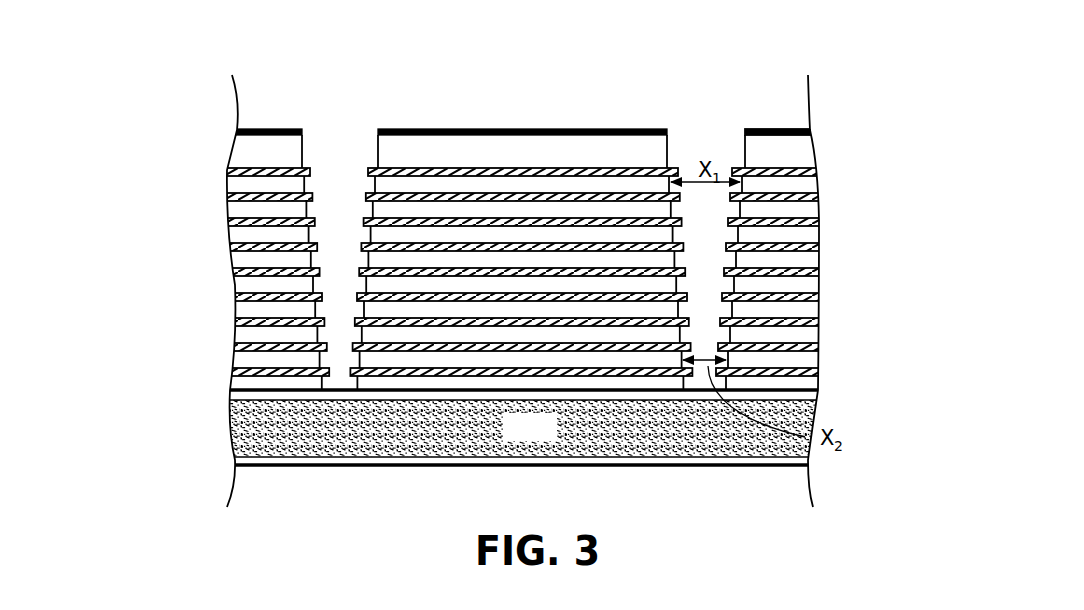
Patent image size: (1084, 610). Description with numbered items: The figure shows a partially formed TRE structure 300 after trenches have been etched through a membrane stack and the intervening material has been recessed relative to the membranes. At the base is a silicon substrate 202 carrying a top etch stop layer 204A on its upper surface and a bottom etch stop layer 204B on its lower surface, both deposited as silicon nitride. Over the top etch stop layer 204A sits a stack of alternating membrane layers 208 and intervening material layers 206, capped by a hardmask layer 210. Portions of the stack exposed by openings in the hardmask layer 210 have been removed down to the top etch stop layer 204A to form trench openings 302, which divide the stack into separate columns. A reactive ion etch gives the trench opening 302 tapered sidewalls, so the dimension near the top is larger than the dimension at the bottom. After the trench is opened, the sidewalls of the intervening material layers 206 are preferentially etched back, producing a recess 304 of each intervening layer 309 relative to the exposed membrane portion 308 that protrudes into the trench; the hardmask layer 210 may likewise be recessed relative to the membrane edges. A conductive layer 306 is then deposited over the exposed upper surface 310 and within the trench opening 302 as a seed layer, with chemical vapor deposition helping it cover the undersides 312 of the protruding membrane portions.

The structure 300 is at (168, 142).
The trench opening 302 is at (341, 108).
The recess 304 is at (370, 184).
The conductive layer 306 is at (273, 127).
The exposed membrane portion 308 is at (357, 170).
The intervening layer 309 is at (467, 184).
The exposed upper surface 310 is at (590, 138).
The undersides of exposed membrane portions 312 is at (727, 234).
The hardmask layer 210 is at (282, 163).
The intervening material layers 206 is at (800, 372).
The membrane layers 208 is at (237, 384).
The silicon substrate 202 is at (547, 441).
The top etch stop layer 204A is at (807, 394).
The bottom etch stop layer 204B is at (806, 460).